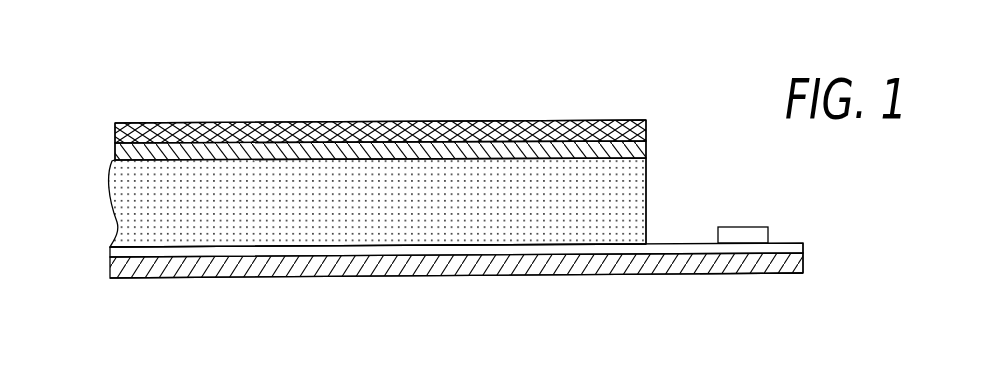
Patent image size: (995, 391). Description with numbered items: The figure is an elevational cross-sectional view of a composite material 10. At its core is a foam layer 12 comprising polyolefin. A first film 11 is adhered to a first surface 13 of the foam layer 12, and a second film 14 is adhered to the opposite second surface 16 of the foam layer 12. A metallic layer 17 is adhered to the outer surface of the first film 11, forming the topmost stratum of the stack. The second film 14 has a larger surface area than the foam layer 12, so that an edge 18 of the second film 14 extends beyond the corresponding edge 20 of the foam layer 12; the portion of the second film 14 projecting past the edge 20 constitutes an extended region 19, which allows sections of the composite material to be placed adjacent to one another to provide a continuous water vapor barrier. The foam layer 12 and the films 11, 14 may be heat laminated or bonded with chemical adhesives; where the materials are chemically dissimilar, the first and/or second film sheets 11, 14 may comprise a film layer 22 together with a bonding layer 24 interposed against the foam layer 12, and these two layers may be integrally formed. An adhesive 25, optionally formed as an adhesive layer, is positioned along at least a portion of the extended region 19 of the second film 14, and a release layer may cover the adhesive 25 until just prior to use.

The composite material 10 is at (452, 84).
The first film 11 is at (106, 158).
The foam layer 12 is at (640, 199).
The first surface 13 is at (210, 160).
The second film 14 is at (685, 278).
The second surface 16 is at (420, 242).
The metallic layer 17 is at (319, 94).
The edge of second film 18 is at (803, 258).
The extended region 19 is at (776, 264).
The edge of foam layer 20 is at (647, 166).
The film layer 22 is at (546, 268).
The bonding layer 24 is at (173, 257).
The adhesive 25 is at (756, 231).